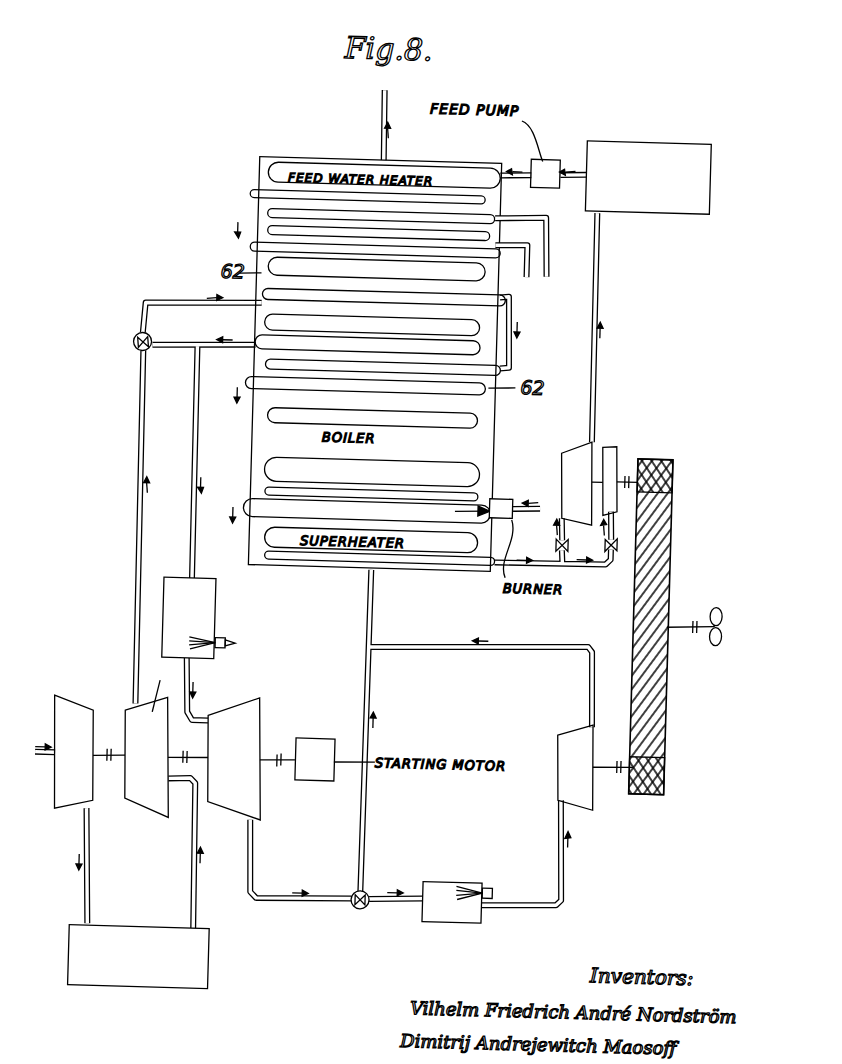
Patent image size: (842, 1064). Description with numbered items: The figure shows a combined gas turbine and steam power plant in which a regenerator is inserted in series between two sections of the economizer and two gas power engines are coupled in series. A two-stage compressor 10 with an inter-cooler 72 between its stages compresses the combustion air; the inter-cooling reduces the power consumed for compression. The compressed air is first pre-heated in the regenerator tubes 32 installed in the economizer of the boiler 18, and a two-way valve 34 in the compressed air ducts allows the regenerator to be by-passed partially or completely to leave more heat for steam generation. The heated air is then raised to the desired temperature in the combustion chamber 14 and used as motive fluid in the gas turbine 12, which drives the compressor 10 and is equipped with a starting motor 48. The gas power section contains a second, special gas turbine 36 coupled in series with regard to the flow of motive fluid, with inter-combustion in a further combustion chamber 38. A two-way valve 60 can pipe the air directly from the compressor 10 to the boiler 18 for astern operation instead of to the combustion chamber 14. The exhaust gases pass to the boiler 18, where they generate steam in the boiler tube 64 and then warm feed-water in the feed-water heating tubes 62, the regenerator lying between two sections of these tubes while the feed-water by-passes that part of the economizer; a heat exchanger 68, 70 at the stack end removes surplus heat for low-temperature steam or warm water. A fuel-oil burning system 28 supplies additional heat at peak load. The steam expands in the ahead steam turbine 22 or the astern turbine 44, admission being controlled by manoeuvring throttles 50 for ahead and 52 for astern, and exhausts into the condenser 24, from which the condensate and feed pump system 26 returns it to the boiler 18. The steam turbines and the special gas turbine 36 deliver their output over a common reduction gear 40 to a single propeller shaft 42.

The compressor 10 is at (108, 735).
The gas turbine 12 is at (234, 743).
The combustion chamber 14 is at (210, 618).
The boiler 18 is at (355, 364).
The ahead steam turbine 22 is at (575, 472).
The condenser 24 is at (648, 163).
The condensate and feed pump system 26 is at (551, 154).
The fuel-oil burning system 28 is at (511, 492).
The regenerator 32 is at (348, 325).
The two-way valve 34 is at (129, 330).
The special gas turbine 36 is at (571, 752).
The combustion chamber 38 is at (458, 886).
The reduction gear 40 is at (669, 627).
The propeller shaft 42 is at (704, 616).
The astern turbine 44 is at (622, 467).
The starting motor 48 is at (315, 742).
The manoeuvring throttle 50 is at (545, 540).
The manoeuvring throttle 52 is at (596, 540).
The two-way valve 60 is at (343, 881).
The feed-water heating tubes 62 is at (373, 255).
The boiler tube 64 is at (402, 420).
The heat exchanger 68 is at (541, 247).
The heat exchanger 70 is at (510, 261).
The inter-cooler 72 is at (139, 937).